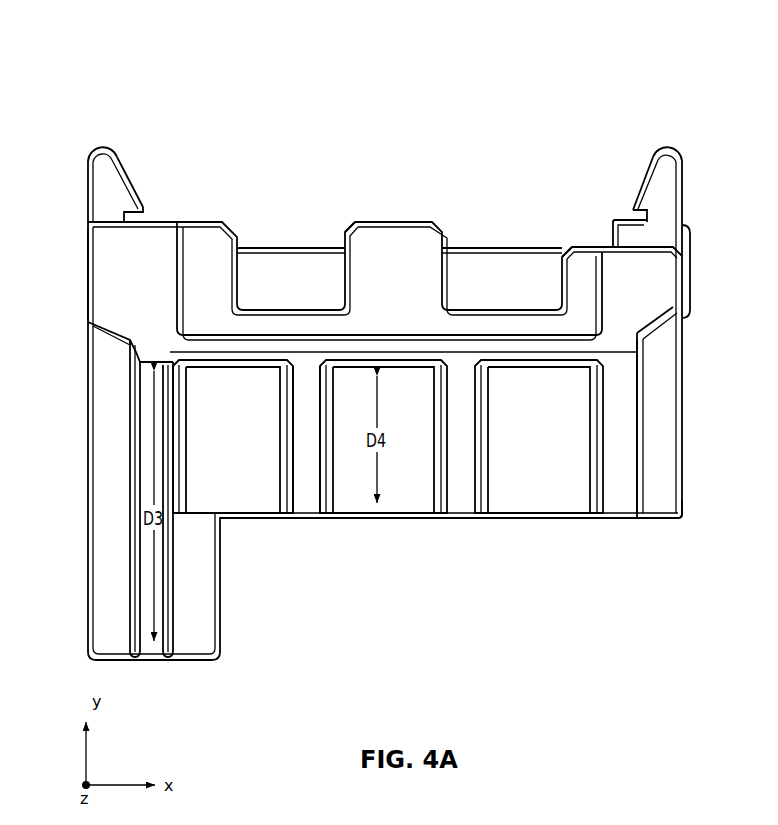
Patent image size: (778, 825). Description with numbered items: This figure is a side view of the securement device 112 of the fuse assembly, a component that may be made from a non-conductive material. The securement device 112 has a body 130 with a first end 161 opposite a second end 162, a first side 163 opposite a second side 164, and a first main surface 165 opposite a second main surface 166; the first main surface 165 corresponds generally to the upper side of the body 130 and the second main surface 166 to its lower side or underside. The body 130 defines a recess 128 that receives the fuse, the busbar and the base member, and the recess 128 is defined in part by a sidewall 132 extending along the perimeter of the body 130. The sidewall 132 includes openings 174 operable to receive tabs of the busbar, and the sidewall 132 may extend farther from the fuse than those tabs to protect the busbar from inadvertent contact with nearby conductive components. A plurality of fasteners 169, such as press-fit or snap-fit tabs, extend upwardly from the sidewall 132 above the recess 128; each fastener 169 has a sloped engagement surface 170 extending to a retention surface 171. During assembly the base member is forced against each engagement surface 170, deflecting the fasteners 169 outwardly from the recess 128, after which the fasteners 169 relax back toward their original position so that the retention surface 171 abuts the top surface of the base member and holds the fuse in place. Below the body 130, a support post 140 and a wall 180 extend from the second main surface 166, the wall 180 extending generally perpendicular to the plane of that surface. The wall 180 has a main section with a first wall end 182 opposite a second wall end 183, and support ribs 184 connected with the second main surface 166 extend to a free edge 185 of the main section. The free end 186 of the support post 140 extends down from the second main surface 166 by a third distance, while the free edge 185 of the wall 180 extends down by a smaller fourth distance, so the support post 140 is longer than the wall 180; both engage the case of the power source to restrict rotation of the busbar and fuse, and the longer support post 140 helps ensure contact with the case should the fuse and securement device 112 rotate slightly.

The securement device 112 is at (404, 90).
The recess 128 is at (263, 270).
The body 130 is at (118, 298).
The sidewall 132 is at (467, 250).
The support post 140 is at (102, 460).
The first end 161 is at (76, 260).
The second end 162 is at (694, 240).
The first side 163 is at (298, 250).
The second side 164 is at (653, 287).
The first main surface 165 is at (503, 302).
The second main surface 166 is at (578, 373).
The fastener 169 is at (90, 140).
The sloped engagement surface 170 is at (132, 180).
The retention surface 171 is at (138, 218).
The opening 174 is at (346, 262).
The wall 180 is at (556, 482).
The first wall end 182 is at (228, 498).
The second wall end 183 is at (658, 500).
The support rib 184 is at (307, 502).
The free edge 185 is at (420, 513).
The free end 186 is at (195, 658).